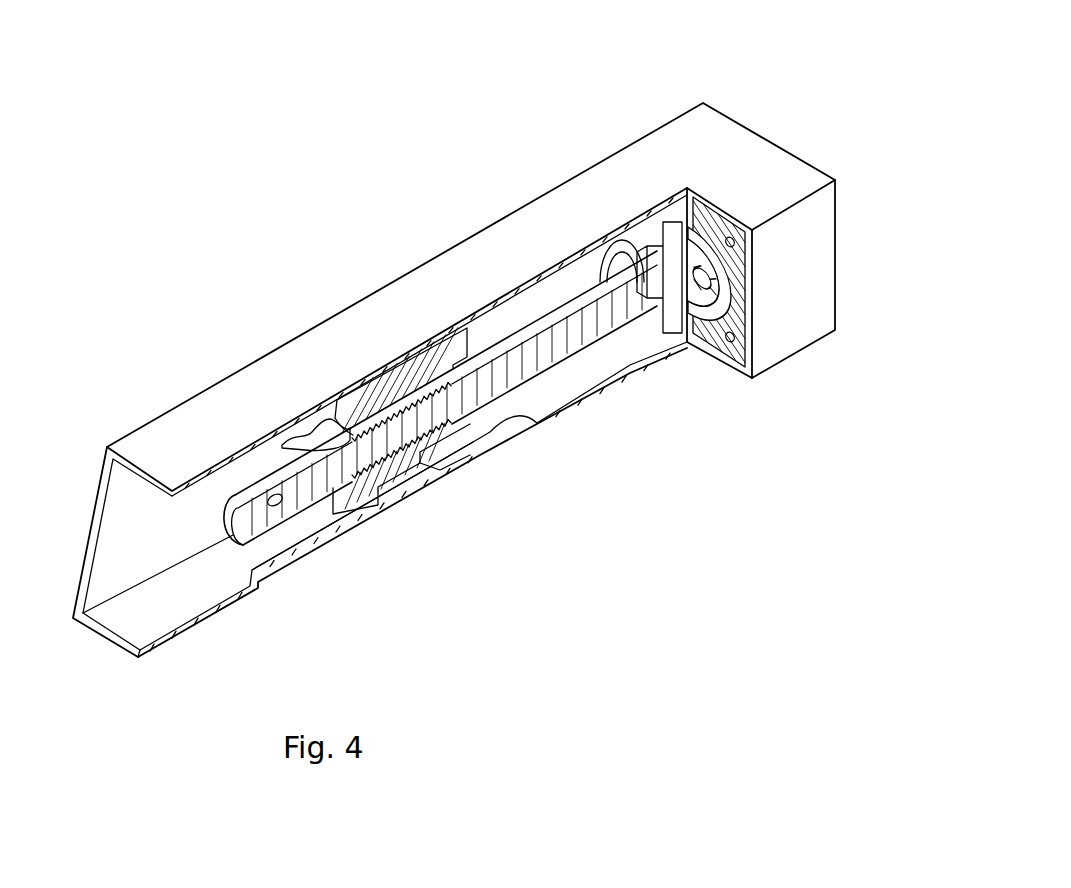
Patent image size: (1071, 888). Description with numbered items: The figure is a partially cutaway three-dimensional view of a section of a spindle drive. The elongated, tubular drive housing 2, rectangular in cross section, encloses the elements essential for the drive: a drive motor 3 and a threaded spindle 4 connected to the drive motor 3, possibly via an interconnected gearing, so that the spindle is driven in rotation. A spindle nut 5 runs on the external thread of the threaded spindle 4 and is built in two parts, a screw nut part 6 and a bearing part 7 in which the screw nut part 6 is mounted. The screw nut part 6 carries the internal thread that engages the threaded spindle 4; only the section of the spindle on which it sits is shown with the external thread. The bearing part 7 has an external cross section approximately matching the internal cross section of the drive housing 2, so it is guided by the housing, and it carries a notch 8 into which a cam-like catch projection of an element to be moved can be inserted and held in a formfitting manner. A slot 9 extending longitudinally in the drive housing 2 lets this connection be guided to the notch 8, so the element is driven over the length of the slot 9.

The drive housing 2 is at (636, 170).
The drive motor 3 is at (737, 327).
The threaded spindle 4 is at (552, 353).
The spindle nut 5 is at (318, 436).
The screw nut part 6 is at (432, 434).
The bearing part 7 is at (383, 385).
The notch 8 is at (413, 472).
The slot 9 is at (300, 543).